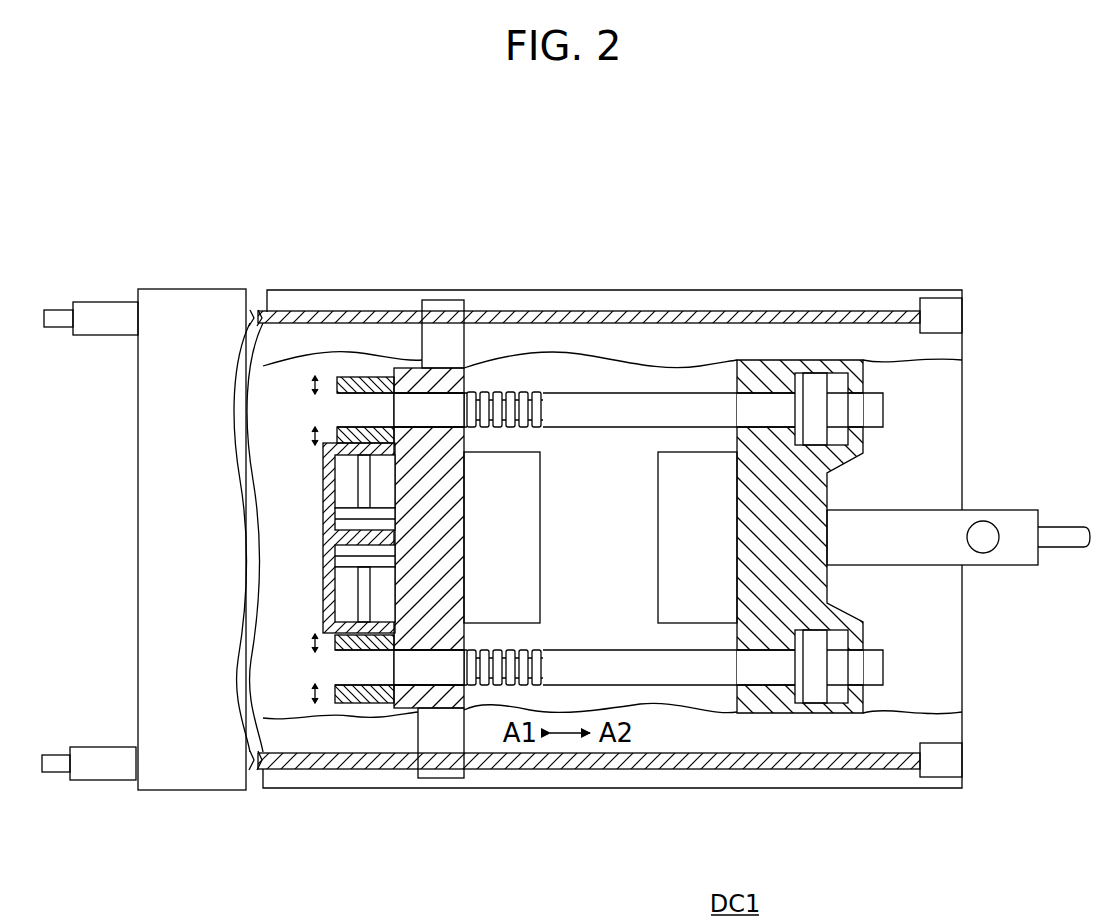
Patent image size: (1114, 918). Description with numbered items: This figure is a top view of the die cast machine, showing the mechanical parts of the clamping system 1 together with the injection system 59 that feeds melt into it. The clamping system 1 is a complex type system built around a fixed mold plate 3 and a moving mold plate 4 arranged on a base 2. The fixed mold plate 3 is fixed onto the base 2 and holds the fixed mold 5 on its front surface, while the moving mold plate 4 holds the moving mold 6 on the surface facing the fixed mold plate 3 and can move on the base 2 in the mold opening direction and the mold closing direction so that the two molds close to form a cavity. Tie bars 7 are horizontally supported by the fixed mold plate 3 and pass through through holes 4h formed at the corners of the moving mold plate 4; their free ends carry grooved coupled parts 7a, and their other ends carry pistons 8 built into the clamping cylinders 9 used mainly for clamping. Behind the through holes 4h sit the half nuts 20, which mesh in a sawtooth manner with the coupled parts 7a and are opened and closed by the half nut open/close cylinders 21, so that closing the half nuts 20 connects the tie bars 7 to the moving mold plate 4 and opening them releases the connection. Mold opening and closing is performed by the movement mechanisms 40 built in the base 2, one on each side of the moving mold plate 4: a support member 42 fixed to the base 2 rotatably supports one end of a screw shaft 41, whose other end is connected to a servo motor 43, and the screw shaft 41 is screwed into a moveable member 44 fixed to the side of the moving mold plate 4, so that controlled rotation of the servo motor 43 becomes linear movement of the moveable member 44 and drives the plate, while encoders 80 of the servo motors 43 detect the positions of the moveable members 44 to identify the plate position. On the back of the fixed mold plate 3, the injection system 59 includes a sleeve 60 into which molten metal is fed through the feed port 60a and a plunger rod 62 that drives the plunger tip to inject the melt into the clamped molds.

The clamping system 1 is at (631, 204).
The base 2 is at (305, 298).
The fixed mold plate 3 is at (775, 715).
The moving mold plate 4 is at (430, 622).
The through holes 4h is at (436, 404).
The fixed mold 5 is at (658, 552).
The moving mold 6 is at (540, 552).
The tie bars 7 is at (623, 412).
The coupled parts 7a is at (521, 427).
The pistons 8 is at (803, 372).
The clamping cylinders 9 is at (836, 370).
The half nuts 20 is at (380, 376).
The half nut open/close cylinders 21 is at (347, 470).
The movement mechanisms 40 is at (514, 307).
The screw shaft 41 is at (735, 311).
The support member 42 is at (940, 314).
The servo motor 43 is at (109, 310).
The moveable member 44 is at (437, 308).
The injection system 59 is at (1038, 420).
The sleeve 60 is at (919, 522).
The feed port 60a is at (983, 530).
The plunger rod 62 is at (1071, 534).
The encoders 80 is at (55, 314).